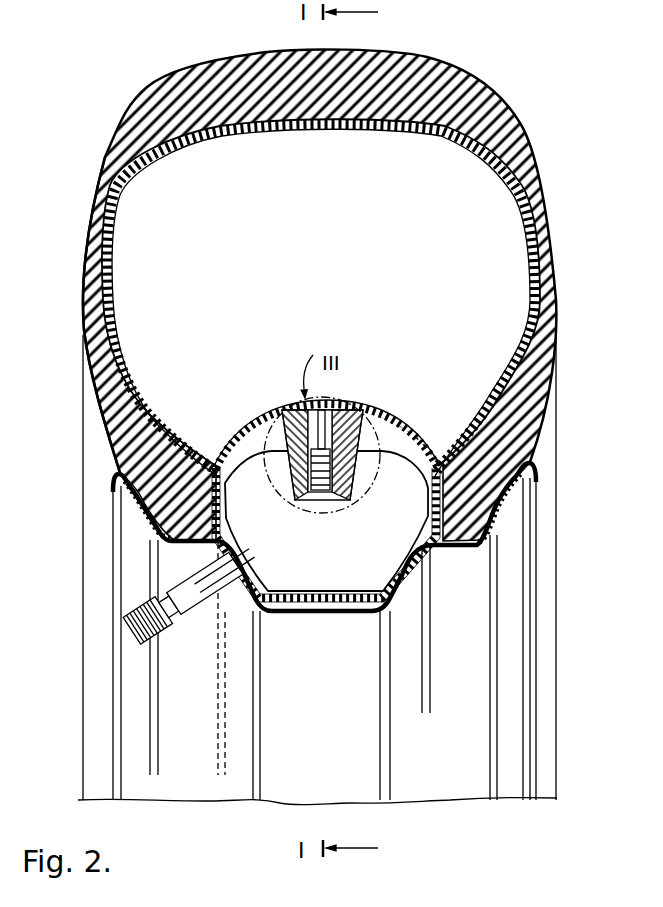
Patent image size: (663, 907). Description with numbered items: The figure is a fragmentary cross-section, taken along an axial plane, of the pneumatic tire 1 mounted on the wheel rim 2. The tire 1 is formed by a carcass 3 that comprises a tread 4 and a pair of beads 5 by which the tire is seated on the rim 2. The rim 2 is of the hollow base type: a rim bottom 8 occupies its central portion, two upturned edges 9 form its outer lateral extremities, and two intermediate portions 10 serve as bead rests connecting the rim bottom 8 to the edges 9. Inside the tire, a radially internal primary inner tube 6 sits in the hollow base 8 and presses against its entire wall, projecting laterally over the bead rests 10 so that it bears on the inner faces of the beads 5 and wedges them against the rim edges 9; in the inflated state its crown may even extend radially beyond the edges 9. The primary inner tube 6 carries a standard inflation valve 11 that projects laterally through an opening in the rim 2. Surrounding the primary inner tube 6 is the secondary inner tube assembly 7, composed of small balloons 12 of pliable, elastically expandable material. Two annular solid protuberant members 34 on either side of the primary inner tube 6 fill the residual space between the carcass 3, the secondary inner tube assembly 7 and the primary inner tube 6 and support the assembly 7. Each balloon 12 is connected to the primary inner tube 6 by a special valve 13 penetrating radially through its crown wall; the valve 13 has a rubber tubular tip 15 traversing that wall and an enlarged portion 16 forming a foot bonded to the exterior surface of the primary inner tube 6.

The pneumatic tire 1 is at (76, 266).
The wheel rim 2 is at (110, 707).
The carcass 3 is at (98, 373).
The tread 4 is at (212, 77).
The beads 5 is at (460, 513).
The primary inner tube 6 is at (362, 586).
The secondary inner tube assembly 7 is at (519, 229).
The rim bottom 8 is at (313, 614).
The upturned edges 9 is at (112, 479).
The intermediate portions 10 is at (170, 539).
The inflation valve 11 is at (198, 608).
The small balloons 12 is at (150, 170).
The special valve 13 is at (337, 410).
The tubular tip 15 is at (293, 473).
The enlarged portion 16 is at (267, 470).
The protuberant members 34 is at (223, 458).